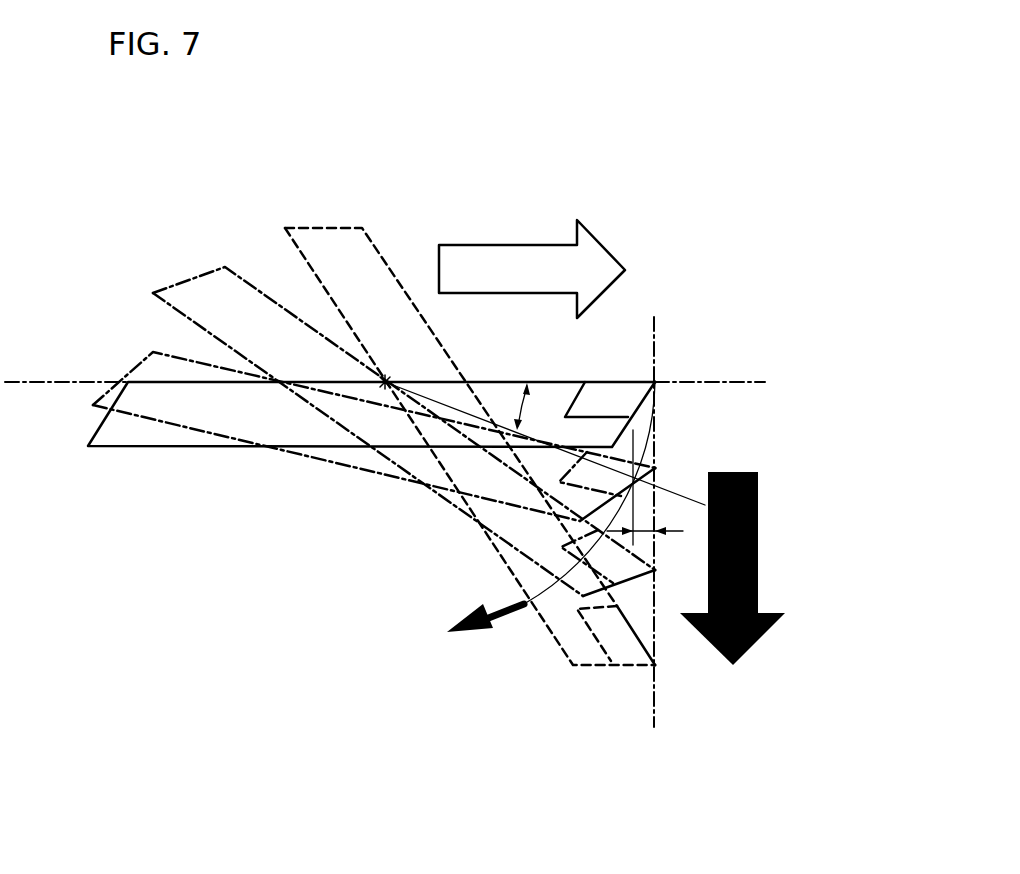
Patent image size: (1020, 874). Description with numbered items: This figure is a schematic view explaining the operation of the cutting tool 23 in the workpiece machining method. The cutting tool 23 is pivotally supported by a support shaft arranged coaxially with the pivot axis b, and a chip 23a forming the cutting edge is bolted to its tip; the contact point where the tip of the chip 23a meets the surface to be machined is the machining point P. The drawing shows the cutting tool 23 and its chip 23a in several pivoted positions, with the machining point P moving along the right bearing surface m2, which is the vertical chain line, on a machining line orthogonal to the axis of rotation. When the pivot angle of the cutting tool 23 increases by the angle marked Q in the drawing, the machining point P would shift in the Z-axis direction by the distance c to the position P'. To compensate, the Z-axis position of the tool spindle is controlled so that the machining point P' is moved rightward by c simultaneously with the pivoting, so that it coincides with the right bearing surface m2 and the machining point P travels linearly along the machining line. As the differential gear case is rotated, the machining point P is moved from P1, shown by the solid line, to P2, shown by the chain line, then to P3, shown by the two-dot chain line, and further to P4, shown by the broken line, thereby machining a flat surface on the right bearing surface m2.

The cutting tool 23 is at (196, 447).
The chip 23a is at (610, 382).
The pivot axis b is at (386, 380).
The rotation angle Q is at (520, 405).
The right bearing surface m2 is at (654, 703).
The shift distance c is at (645, 537).
The machining point P is at (696, 352).
The machining point position shown by solid line P1 is at (655, 383).
The shifted machining point position P' is at (704, 440).
The machining point position shown by chain line P2 is at (654, 468).
The machining point position shown by two-dot chain line P3 is at (655, 572).
The machining point position shown by broken line P4 is at (654, 667).